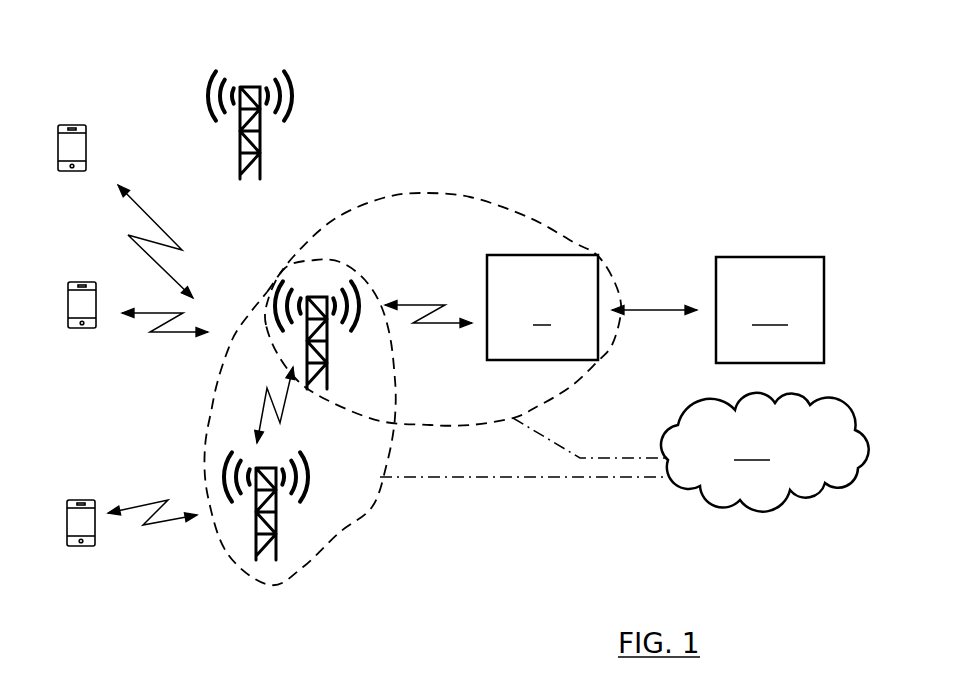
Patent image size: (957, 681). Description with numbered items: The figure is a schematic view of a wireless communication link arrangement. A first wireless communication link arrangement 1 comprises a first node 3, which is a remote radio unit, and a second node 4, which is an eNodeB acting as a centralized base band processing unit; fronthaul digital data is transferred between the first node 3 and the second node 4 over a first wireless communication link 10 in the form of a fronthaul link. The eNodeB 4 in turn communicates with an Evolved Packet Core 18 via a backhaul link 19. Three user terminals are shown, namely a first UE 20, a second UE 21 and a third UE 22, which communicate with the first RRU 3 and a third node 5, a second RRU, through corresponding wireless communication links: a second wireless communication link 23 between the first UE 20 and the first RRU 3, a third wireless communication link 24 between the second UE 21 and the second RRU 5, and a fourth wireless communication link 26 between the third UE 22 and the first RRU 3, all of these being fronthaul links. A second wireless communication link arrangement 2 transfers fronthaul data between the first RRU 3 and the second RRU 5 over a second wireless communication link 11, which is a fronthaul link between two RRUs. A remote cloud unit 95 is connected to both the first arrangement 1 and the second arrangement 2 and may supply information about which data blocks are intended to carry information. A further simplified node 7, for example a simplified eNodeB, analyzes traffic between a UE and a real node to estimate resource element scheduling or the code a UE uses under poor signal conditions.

The first wireless communication link arrangement 1 is at (433, 192).
The second wireless communication link arrangement 2 is at (375, 508).
The first node 3 is at (318, 283).
The second node 4 is at (542, 307).
The third node 5 is at (310, 514).
The further simplified node 7 is at (240, 66).
The first wireless communication link 10 is at (427, 302).
The second wireless communication link 11 is at (263, 400).
The Evolved Packet Core 18 is at (770, 310).
The backhaul link 19 is at (648, 312).
The first UE 20 is at (93, 328).
The second UE 21 is at (90, 547).
The third UE 22 is at (76, 171).
The second wireless communication link 23 is at (143, 316).
The third wireless communication link 24 is at (165, 522).
The fourth wireless communication link 26 is at (155, 221).
The remote cloud unit 95 is at (765, 452).